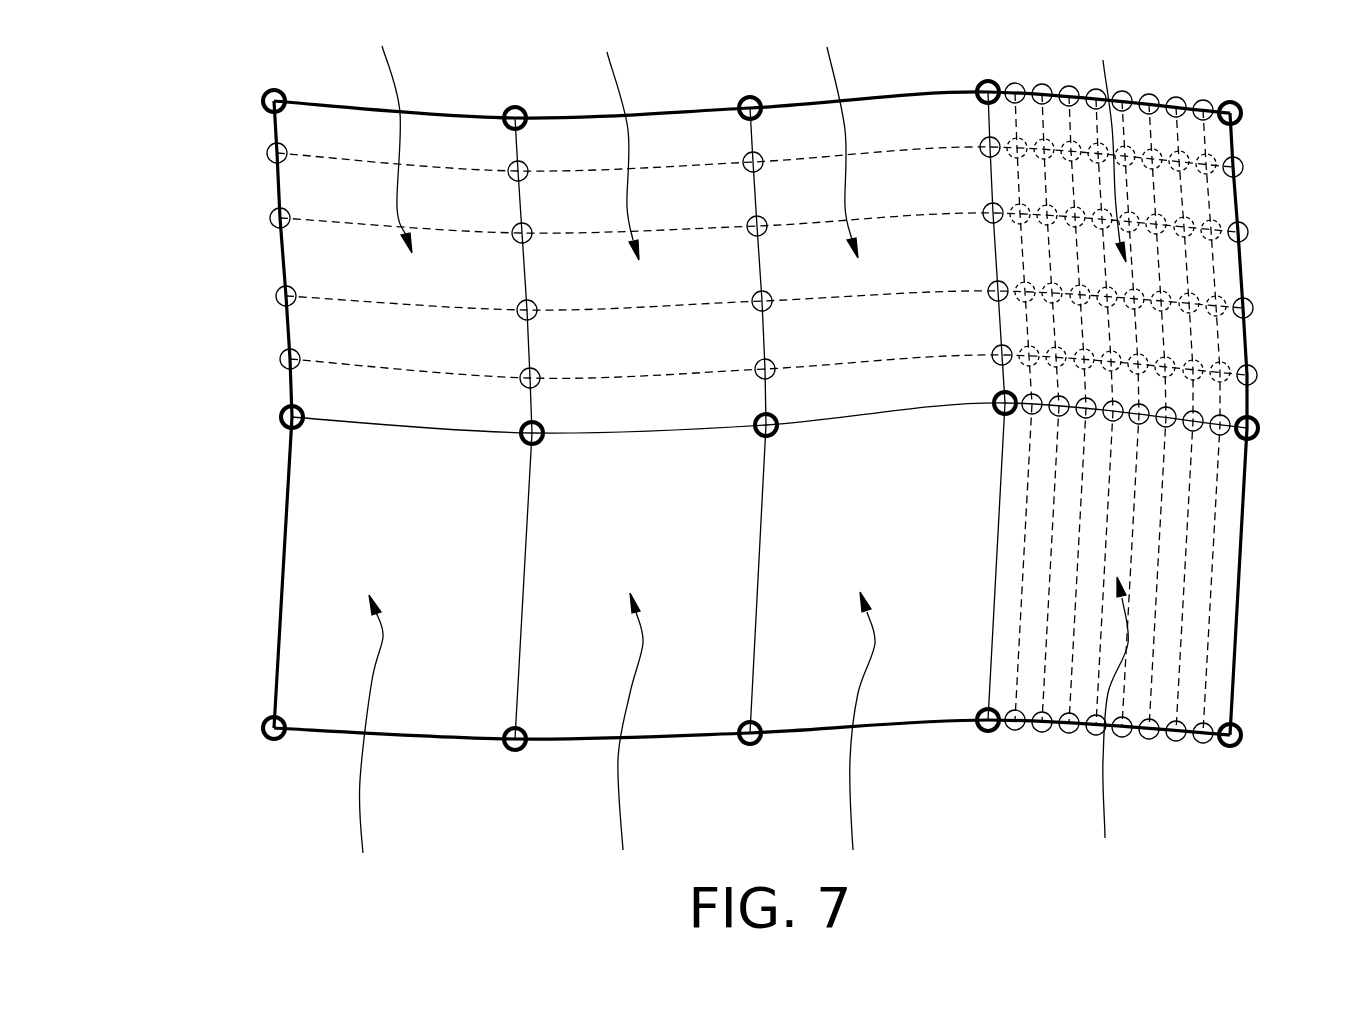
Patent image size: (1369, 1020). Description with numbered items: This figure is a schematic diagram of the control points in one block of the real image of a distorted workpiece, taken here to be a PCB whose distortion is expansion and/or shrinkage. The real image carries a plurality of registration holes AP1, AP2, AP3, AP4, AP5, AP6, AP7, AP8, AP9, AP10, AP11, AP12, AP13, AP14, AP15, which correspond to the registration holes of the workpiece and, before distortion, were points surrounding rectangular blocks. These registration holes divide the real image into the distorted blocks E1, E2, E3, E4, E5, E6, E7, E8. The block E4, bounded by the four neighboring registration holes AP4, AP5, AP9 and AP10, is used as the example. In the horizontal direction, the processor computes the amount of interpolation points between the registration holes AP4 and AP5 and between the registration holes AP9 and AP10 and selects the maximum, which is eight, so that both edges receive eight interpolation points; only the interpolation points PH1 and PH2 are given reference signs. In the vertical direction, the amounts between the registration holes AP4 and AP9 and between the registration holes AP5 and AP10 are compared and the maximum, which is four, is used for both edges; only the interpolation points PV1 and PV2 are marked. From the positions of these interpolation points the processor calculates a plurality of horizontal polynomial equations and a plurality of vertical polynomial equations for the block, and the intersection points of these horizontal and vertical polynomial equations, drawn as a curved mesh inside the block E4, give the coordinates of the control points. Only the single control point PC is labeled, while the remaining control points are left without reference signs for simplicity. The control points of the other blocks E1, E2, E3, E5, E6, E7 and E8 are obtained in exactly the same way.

The registration hole AP1 is at (264, 93).
The registration hole AP2 is at (506, 110).
The registration hole AP3 is at (742, 100).
The registration hole AP4 is at (980, 84).
The registration hole AP5 is at (1238, 105).
The registration hole AP6 is at (284, 423).
The registration hole AP7 is at (525, 440).
The registration hole AP8 is at (760, 432).
The registration hole AP9 is at (998, 411).
The registration hole AP10 is at (1254, 437).
The registration hole AP11 is at (267, 736).
The registration hole AP12 is at (508, 746).
The registration hole AP13 is at (744, 741).
The registration hole AP14 is at (981, 728).
The registration hole AP15 is at (1238, 744).
The distorted block E1 is at (389, 137).
The distorted block E2 is at (615, 140).
The distorted block E3 is at (835, 139).
The distorted block E4 is at (1107, 147).
The distorted block E5 is at (366, 739).
The distorted block E6 is at (626, 737).
The distorted block E7 is at (859, 736).
The distorted block E8 is at (1110, 722).
The interpolation point PV1 is at (1243, 167).
The interpolation point PV2 is at (984, 142).
The interpolation point PH1 is at (1216, 104).
The interpolation point PH2 is at (1254, 419).
The control point PC is at (1216, 174).